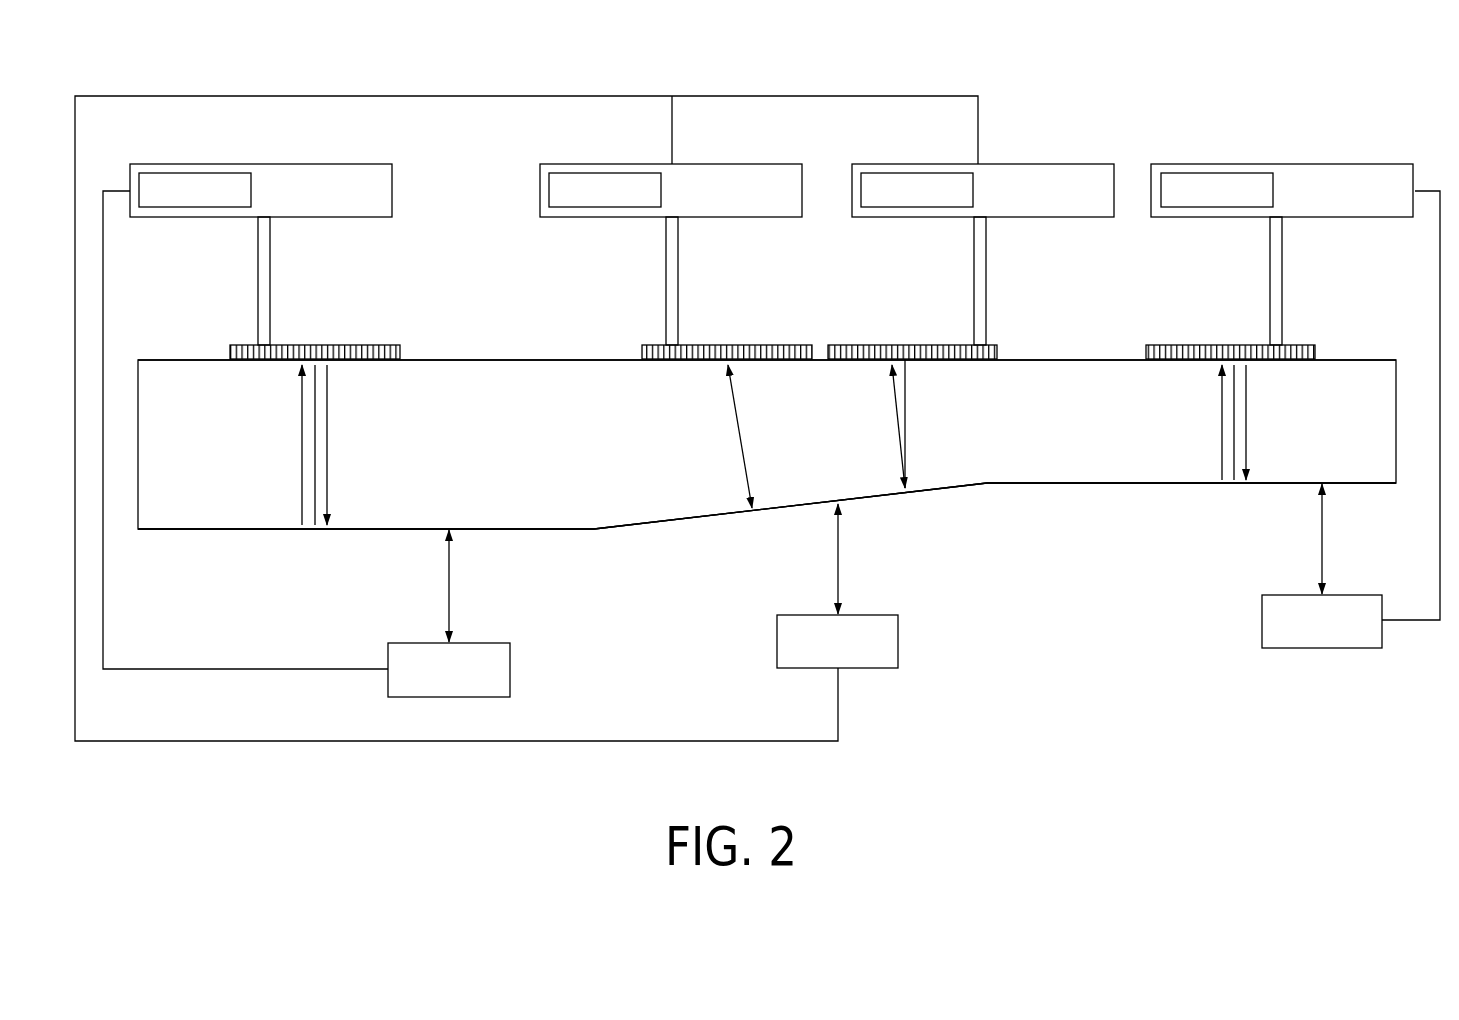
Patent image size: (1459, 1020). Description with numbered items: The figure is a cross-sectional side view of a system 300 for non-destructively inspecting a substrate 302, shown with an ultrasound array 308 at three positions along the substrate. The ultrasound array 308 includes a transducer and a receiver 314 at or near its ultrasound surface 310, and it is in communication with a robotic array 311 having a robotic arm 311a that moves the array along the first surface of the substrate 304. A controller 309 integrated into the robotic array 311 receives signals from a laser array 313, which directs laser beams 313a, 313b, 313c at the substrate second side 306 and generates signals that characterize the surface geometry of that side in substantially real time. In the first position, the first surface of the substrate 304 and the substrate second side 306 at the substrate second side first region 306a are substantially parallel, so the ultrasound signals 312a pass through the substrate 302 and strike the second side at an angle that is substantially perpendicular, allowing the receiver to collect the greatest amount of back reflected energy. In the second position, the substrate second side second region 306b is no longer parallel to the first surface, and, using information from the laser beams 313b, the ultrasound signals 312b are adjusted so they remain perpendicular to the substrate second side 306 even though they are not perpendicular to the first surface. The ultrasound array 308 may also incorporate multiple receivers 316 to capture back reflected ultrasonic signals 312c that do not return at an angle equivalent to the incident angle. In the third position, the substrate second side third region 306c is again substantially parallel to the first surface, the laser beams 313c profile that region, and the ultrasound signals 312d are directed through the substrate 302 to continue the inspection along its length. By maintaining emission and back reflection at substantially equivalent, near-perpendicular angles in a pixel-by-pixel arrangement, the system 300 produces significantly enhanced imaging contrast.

The system 300 is at (1112, 103).
The substrate 302 is at (1047, 398).
The first surface of the substrate 304 is at (500, 358).
The substrate second side 306 is at (1058, 485).
The substrate second side first region 306a is at (318, 531).
The substrate second side second region 306b is at (690, 520).
The substrate second side third region 306c is at (1186, 485).
The ultrasound array 308 is at (400, 352).
The controller 309 is at (197, 173).
The ultrasound surface 310 is at (241, 362).
The robotic array 311 is at (310, 164).
The robotic arm 311a is at (258, 275).
The ultrasound signals 312a is at (300, 452).
The ultrasound signals 312b is at (738, 428).
The back reflected ultrasonic signals 312c is at (910, 405).
The ultrasound signals 312d is at (1246, 415).
The laser array 313 is at (510, 669).
The laser beams 313a is at (452, 595).
The laser beams 313b is at (840, 561).
The laser beams 313c is at (1324, 540).
The receiver 314 is at (312, 359).
The multiple receivers 316 is at (892, 360).